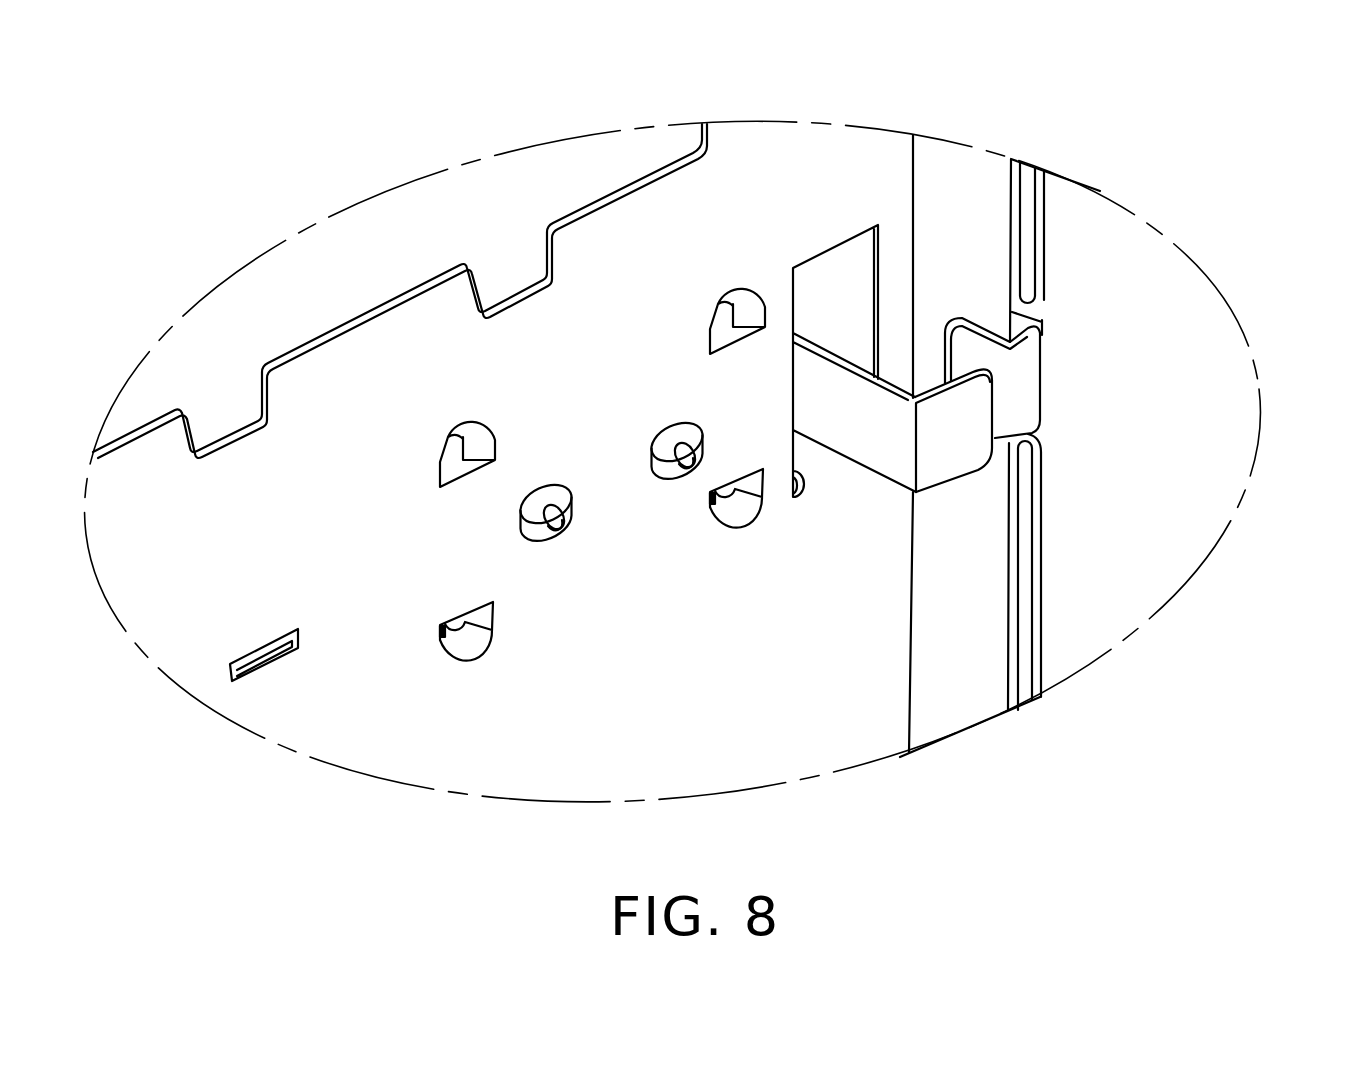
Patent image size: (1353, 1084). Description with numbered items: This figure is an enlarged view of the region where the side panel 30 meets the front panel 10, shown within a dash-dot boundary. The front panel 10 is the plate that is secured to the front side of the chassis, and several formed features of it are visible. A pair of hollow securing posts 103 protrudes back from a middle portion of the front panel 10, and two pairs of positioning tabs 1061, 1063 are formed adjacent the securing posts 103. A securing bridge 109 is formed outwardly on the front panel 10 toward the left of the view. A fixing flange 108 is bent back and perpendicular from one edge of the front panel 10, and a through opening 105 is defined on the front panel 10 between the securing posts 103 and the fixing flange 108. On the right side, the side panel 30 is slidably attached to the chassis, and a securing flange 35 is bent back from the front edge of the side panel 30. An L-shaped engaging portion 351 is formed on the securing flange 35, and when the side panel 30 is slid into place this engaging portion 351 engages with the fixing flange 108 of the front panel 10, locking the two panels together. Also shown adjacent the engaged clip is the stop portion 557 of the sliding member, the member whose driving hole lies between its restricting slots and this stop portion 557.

The front panel 10 is at (684, 773).
The side panel 30 is at (1202, 357).
The securing flange 35 is at (1023, 670).
The hollow securing post 103 is at (520, 516).
The through opening 105 is at (847, 263).
The fixing flange 108 is at (960, 710).
The securing bridge 109 is at (293, 640).
The L-shaped engaging portion 351 is at (1032, 357).
The stop portion 557 is at (967, 461).
The positioning tab 1061 is at (467, 638).
The positioning tab 1063 is at (744, 507).